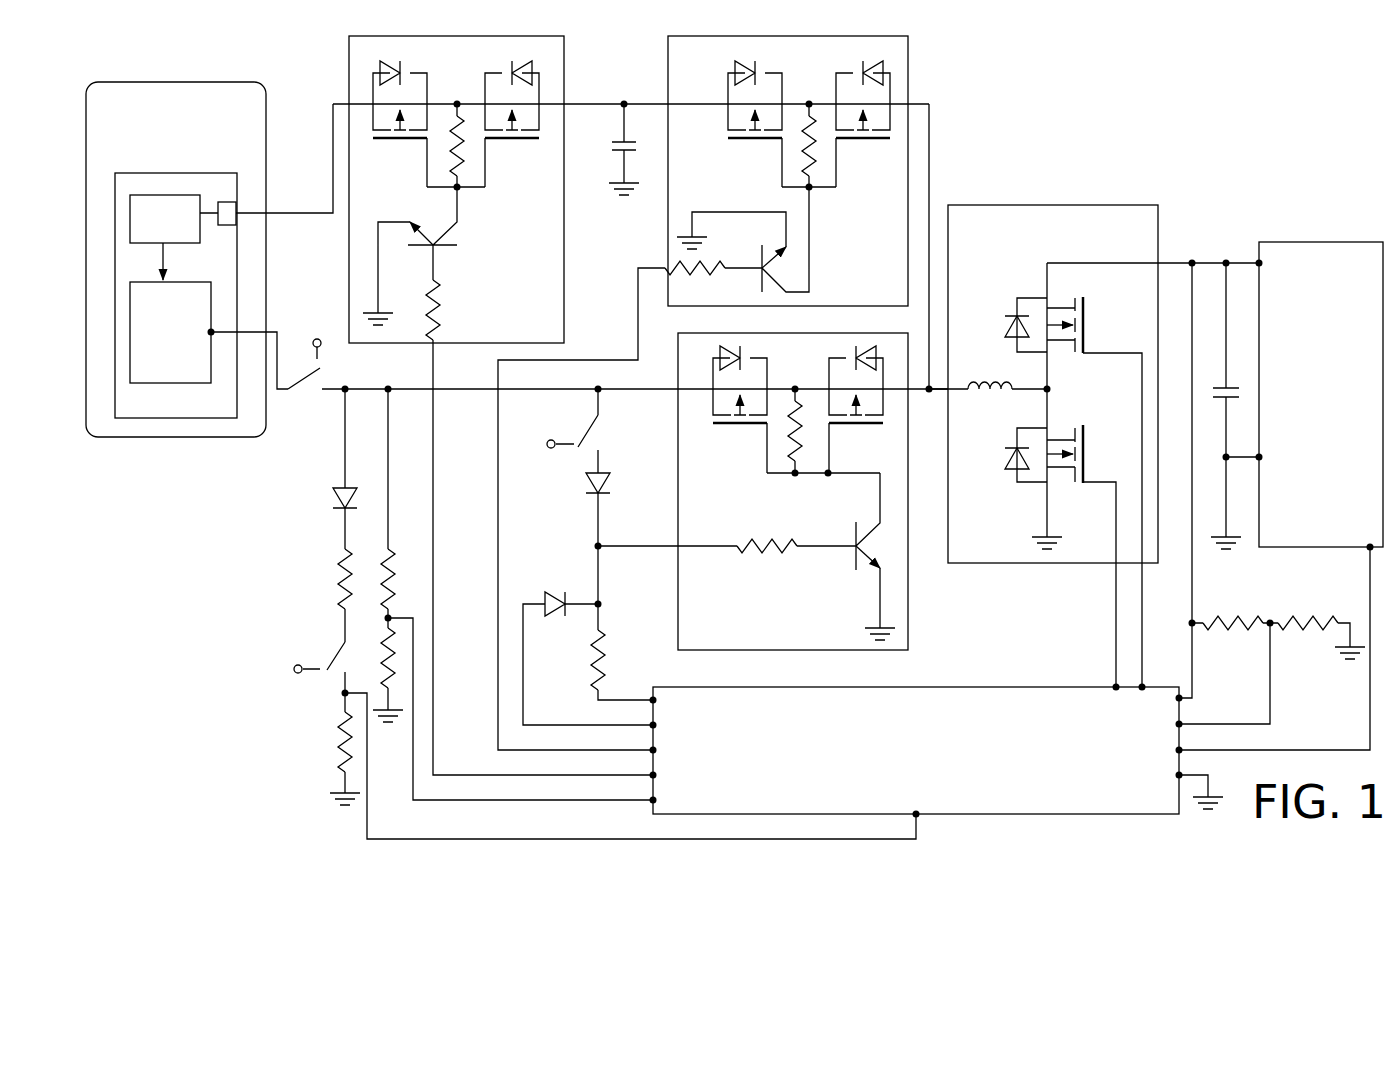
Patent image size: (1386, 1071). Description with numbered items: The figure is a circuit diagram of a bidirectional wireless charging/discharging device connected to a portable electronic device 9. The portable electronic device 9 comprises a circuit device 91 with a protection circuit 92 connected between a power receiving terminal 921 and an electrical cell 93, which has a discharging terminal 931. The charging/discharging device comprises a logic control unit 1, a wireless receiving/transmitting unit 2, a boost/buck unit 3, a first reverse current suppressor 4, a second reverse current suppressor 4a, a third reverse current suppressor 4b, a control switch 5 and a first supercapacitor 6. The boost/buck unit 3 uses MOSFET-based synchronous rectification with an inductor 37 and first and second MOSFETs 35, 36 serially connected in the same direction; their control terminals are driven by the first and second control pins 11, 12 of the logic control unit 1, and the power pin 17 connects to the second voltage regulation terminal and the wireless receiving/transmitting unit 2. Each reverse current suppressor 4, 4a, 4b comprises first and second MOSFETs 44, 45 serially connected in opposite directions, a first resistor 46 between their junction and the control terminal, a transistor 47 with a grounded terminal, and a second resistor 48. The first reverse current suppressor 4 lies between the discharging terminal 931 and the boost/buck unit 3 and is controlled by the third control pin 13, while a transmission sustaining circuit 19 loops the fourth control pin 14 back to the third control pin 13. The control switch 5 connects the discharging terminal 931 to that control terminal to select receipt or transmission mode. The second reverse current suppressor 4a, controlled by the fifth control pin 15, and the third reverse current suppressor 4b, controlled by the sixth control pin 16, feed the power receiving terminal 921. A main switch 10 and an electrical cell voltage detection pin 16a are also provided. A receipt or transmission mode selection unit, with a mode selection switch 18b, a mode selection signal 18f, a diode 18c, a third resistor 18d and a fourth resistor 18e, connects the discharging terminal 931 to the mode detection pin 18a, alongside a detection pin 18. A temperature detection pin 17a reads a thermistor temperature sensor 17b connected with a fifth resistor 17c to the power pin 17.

The logic control unit 1 is at (960, 687).
The wireless receiving/transmitting unit 2 is at (1262, 222).
The boost/buck unit 3 is at (1078, 200).
The first MOSFET 35 is at (1024, 298).
The second MOSFET 36 is at (1060, 480).
The inductor 37 is at (983, 395).
The first reverse current suppressor 4 is at (911, 618).
The second reverse current suppressor 4a is at (912, 58).
The third reverse current suppressor 4b is at (347, 76).
The first MOSFET 44 is at (403, 64).
The second MOSFET 45 is at (510, 60).
The first resistor 46 is at (466, 149).
The transistor 47 is at (460, 238).
The second resistor 48 is at (445, 316).
The control switch 5 is at (556, 455).
The first supercapacitor 6 is at (610, 128).
The portable electronic device 9 is at (194, 80).
The circuit device 91 is at (140, 418).
The protection circuit 92 is at (163, 195).
The power receiving terminal 921 is at (226, 202).
The electrical cell 93 is at (183, 383).
The discharging terminal 931 is at (212, 335).
The main switch 10 is at (309, 380).
The first control pin 11 is at (1143, 684).
The second control pin 12 is at (1115, 685).
The third control pin 13 is at (652, 700).
The fourth control pin 14 is at (650, 725).
The fifth control pin 15 is at (650, 750).
The sixth control pin 16 is at (650, 775).
The electrical cell voltage detection pin 16a is at (650, 800).
The power pin 17 is at (1180, 698).
The temperature detection pin 17a is at (1180, 724).
The temperature sensor 17b is at (1310, 618).
The fifth resistor 17c is at (1230, 618).
The detection pin 18 is at (1180, 750).
The receipt or transmission mode detection pin 18a is at (920, 818).
The receipt or transmission mode selection switch 18b is at (338, 674).
The diode 18c is at (333, 500).
The third resistor 18d is at (338, 578).
The fourth resistor 18e is at (338, 740).
The receipt or transmission mode selection signal 18f is at (340, 693).
The transmission sustaining circuit 19 is at (523, 665).